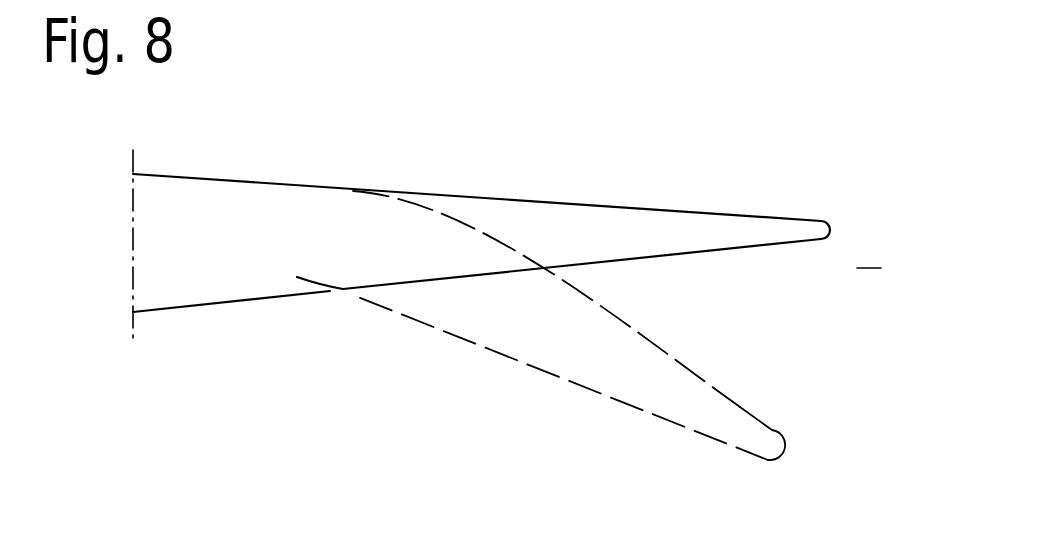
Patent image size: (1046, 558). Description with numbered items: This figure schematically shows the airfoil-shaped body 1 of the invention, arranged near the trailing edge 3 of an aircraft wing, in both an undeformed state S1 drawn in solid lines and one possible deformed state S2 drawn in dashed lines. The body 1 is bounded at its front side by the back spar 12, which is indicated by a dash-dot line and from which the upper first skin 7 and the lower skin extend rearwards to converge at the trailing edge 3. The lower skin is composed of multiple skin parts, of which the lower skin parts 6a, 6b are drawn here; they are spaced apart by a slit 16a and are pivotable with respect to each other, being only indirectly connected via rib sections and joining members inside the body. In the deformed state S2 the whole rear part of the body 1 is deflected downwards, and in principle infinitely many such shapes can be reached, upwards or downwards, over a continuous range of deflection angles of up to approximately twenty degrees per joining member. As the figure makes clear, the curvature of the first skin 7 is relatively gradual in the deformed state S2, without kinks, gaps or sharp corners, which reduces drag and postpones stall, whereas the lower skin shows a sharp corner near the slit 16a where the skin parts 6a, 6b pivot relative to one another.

The airfoil-shaped body 1 is at (481, 250).
The first skin 7 is at (423, 195).
The lower skin part 6a is at (640, 260).
The lower skin part 6b is at (195, 310).
The slit 16a is at (340, 291).
The back spar 12 is at (132, 226).
The undeformed state S1 is at (583, 222).
The deformed state S2 is at (677, 390).
The trailing edge 3 is at (869, 255).